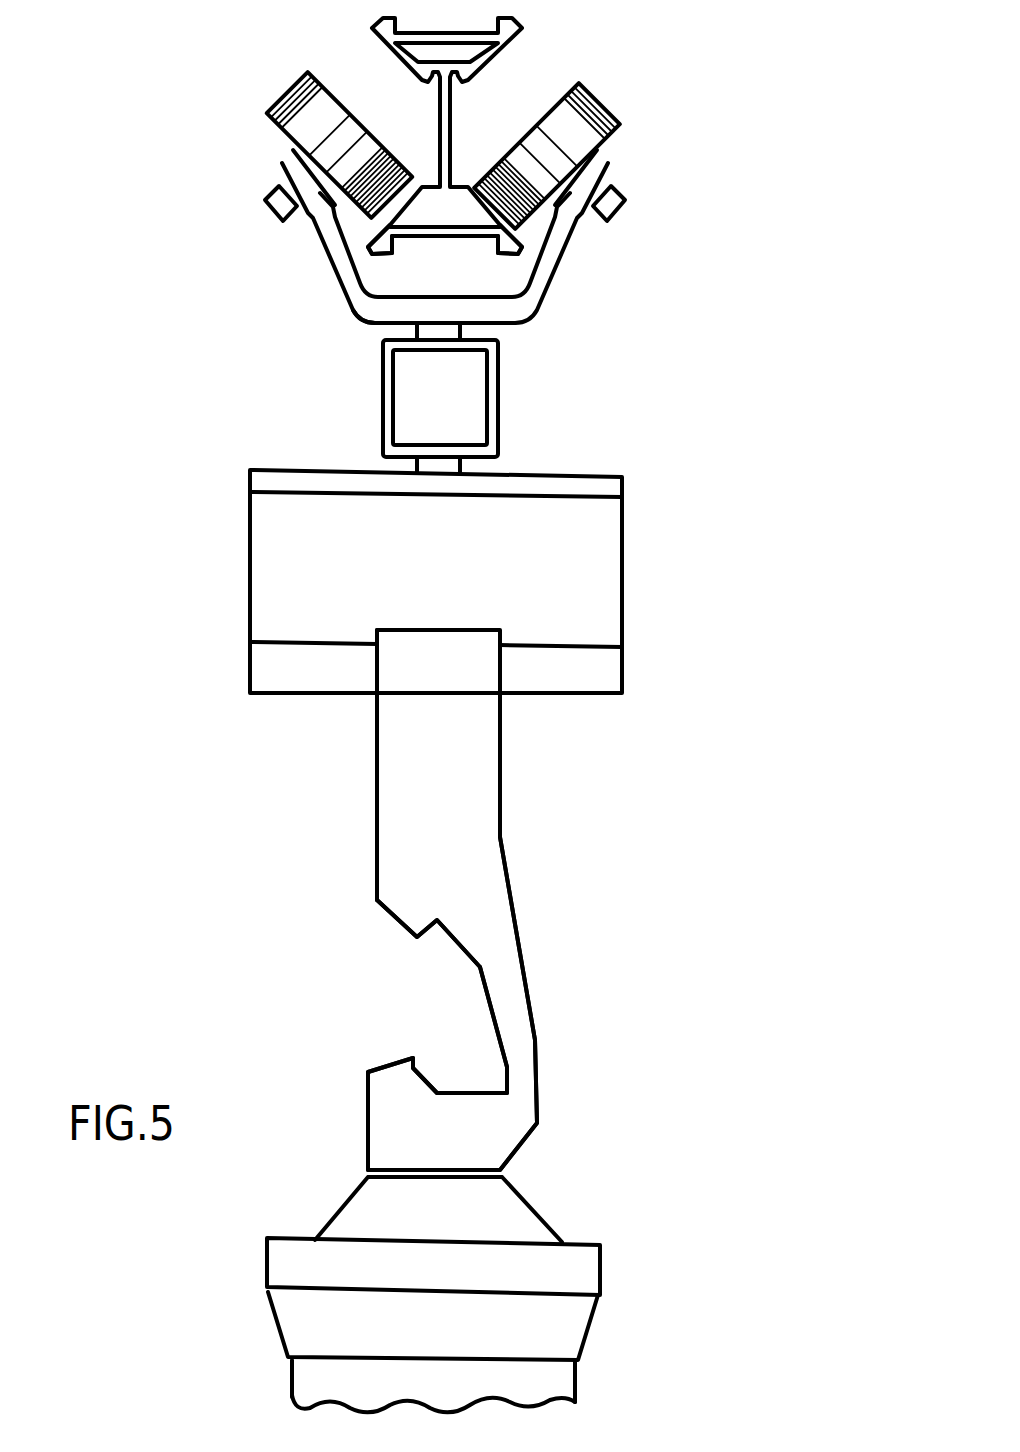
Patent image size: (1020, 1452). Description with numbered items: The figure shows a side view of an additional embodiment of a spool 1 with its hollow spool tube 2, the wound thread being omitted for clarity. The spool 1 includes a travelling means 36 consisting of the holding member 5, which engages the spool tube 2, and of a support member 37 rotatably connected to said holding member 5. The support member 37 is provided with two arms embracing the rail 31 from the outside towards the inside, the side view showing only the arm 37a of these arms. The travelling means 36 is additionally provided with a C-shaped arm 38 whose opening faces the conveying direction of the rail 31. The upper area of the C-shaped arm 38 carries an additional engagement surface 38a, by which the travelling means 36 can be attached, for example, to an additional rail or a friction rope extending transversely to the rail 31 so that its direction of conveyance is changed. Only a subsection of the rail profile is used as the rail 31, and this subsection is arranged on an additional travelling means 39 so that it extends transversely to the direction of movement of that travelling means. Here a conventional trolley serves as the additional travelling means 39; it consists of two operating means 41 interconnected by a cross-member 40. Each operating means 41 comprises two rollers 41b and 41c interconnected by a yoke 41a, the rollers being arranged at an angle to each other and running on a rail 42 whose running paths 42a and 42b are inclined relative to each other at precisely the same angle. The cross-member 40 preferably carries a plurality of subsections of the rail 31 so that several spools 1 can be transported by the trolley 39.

The spool 1 is at (272, 1144).
The spool tube 2 is at (543, 1383).
The holding member 5 is at (547, 1268).
The rail 31 is at (313, 665).
The travelling means 36 is at (634, 897).
The support member 37 is at (472, 805).
The arm 37a is at (413, 738).
The C-shaped arm 38 is at (513, 1027).
The engagement surface 38a is at (450, 947).
The additional travelling means 39 is at (600, 392).
The cross-member 40 is at (498, 378).
The operating means 41 is at (338, 265).
The yoke 41a is at (362, 303).
The roller 41b is at (300, 107).
The roller 41c is at (607, 105).
The rail 42 is at (440, 145).
The running path 42a is at (368, 225).
The running path 42b is at (530, 228).